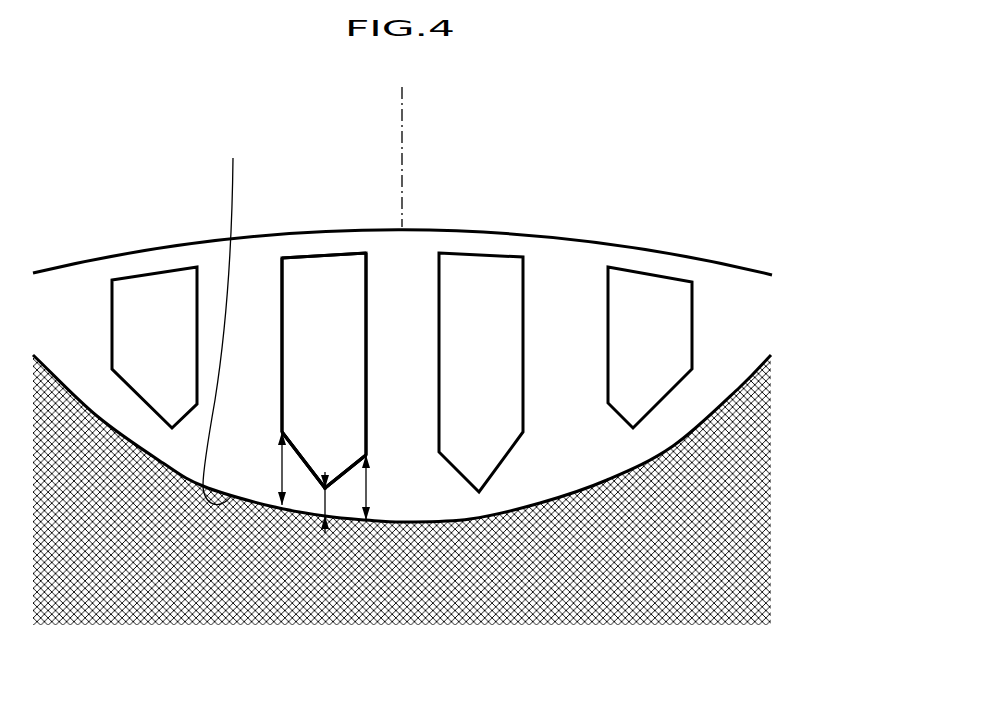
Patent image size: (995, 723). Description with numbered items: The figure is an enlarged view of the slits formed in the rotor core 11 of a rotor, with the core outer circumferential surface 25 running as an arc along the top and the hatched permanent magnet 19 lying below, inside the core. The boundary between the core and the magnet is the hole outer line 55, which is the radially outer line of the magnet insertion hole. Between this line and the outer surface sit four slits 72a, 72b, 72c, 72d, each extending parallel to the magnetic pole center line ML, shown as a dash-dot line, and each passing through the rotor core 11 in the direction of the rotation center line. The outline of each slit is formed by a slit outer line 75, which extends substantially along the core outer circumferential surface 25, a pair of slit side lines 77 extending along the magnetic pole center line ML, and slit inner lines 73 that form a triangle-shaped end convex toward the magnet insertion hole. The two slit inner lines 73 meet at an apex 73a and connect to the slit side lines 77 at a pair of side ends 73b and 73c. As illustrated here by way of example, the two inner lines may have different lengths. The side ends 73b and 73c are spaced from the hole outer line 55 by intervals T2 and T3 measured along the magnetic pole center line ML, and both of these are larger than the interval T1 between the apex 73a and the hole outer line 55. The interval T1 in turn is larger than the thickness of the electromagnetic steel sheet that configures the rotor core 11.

The rotor core 11 is at (561, 256).
The permanent magnet 19 is at (630, 602).
The core outer circumferential surface 25 is at (57, 272).
The hole outer line 55 is at (224, 319).
The slit 72a is at (297, 273).
The slit 72b is at (477, 268).
The slit 72c is at (142, 293).
The slit 72d is at (653, 290).
The slit inner lines 73 is at (313, 475).
The apex 73a is at (338, 490).
The side end 73b is at (367, 455).
The side end 73c is at (281, 428).
The slit outer line 75 is at (328, 253).
The slit side lines 77 is at (280, 290).
The magnetic pole center line ML is at (407, 113).
The interval T1 is at (325, 472).
The interval T2 is at (368, 487).
The interval T3 is at (281, 462).